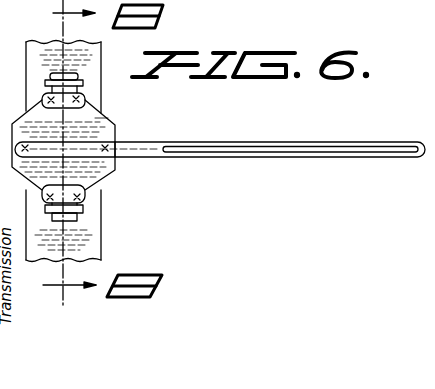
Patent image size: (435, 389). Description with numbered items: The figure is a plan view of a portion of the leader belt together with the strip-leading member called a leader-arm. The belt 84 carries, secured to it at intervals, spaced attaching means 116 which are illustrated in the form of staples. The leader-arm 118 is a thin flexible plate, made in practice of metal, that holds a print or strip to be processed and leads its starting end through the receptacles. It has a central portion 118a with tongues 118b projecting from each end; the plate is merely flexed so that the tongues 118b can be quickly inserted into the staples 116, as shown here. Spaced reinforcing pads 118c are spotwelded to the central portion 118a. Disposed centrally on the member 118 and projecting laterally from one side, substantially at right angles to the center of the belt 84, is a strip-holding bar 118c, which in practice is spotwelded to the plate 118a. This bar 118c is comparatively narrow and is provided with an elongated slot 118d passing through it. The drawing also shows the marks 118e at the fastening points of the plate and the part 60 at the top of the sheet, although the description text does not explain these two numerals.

The transmission housing portion 60 is at (248, 0).
The belt 84 is at (92, 235).
The attaching means 116 is at (84, 82).
The leader-arm 118 is at (35, 112).
The central portion 118a is at (95, 118).
The tongues 118b is at (68, 73).
The strip-holding bar 118c is at (222, 142).
The elongated slot 118d is at (255, 150).
The rivets 118e is at (50, 196).